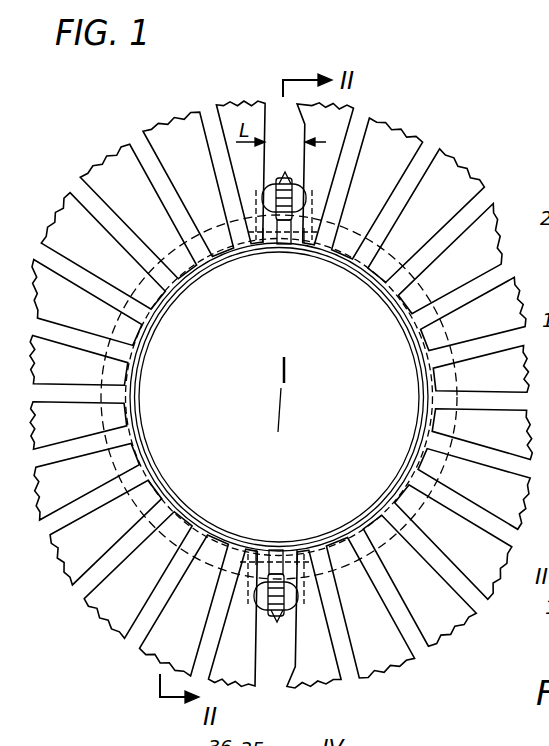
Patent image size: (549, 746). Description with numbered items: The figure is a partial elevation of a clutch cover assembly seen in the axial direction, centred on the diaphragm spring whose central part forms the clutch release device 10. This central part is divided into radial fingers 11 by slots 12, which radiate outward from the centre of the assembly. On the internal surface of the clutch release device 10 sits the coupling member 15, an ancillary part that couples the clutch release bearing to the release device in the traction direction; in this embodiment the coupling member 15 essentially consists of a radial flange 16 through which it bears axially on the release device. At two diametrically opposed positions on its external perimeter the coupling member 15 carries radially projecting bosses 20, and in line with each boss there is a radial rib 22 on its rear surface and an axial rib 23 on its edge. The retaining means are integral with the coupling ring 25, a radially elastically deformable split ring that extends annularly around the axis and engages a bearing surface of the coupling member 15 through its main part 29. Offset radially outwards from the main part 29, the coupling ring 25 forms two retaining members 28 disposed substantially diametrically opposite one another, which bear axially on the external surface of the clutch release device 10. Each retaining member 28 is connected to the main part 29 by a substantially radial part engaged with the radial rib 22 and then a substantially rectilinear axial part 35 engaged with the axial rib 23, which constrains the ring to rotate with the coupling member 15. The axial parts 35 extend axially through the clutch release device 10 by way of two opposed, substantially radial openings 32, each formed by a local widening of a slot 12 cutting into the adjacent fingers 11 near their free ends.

The clutch release device 10 is at (106, 147).
The radial fingers 11 is at (372, 262).
The slots 12 is at (404, 300).
The coupling member 15 is at (425, 255).
The radial flange 16 is at (448, 352).
The radially projecting bosses 20 is at (324, 190).
The radial rib 22 is at (333, 240).
The axial rib 23 is at (284, 245).
The coupling ring 25 is at (160, 342).
The retaining member 28 is at (262, 243).
The main part 29 is at (182, 292).
The openings 32 is at (288, 125).
The axial part 35 is at (252, 638).